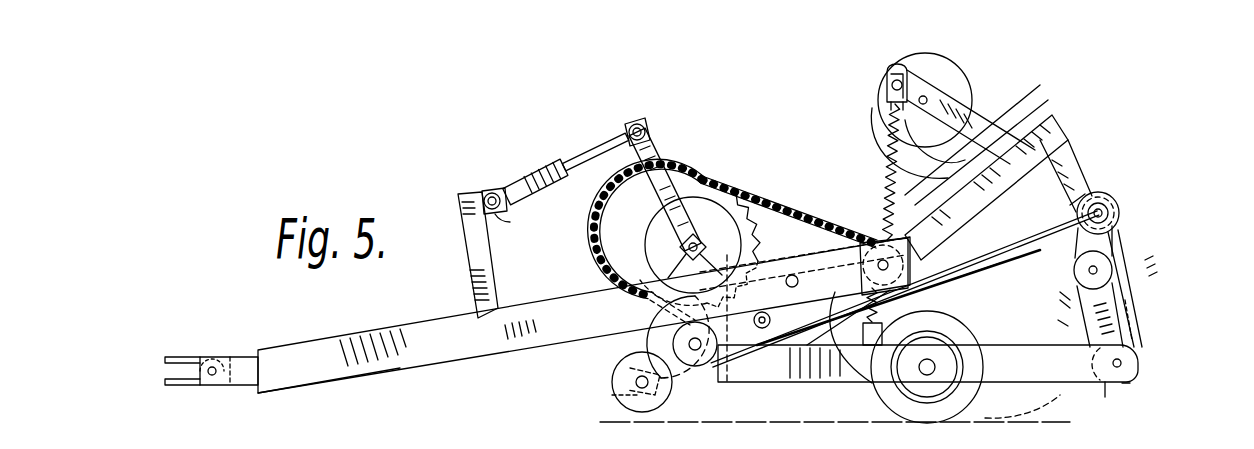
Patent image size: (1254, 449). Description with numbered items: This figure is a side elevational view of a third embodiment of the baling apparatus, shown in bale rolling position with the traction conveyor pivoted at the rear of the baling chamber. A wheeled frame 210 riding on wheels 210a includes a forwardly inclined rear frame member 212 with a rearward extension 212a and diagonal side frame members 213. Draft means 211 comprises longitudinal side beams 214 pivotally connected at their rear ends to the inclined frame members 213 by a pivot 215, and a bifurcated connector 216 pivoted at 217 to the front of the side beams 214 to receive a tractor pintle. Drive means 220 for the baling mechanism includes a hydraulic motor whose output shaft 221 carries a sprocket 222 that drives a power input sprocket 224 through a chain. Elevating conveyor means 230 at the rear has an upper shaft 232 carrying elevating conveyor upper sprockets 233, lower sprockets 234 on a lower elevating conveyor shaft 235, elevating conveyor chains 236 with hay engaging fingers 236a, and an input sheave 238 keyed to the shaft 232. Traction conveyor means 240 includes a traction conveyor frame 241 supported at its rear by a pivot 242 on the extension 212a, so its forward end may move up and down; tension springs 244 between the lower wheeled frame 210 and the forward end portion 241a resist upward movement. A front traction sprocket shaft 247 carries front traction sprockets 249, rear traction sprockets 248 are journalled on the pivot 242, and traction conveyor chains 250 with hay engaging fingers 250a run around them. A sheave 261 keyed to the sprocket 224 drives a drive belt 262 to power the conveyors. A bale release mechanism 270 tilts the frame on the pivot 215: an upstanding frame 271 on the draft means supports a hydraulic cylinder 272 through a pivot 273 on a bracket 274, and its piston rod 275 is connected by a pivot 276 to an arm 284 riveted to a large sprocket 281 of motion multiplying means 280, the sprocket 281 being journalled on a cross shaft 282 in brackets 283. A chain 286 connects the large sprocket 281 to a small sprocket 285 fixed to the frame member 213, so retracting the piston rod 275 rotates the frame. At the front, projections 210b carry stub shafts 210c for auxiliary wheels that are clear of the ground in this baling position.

The frame 210 is at (820, 388).
The wheels 210a is at (905, 380).
The projections 210b is at (636, 382).
The stub shafts 210c is at (618, 398).
The draft means 211 is at (478, 372).
The rear frame member 212 is at (1068, 132).
The rearward extension 212a is at (1110, 194).
The side frame members 213 is at (990, 232).
The side beams 214 is at (333, 348).
The pivot 215 is at (892, 265).
The bifurcated connector 216 is at (182, 355).
The pivot 217 is at (212, 367).
The drive means 220 is at (625, 349).
The output shaft 221 is at (790, 276).
The sprocket 222 is at (822, 236).
The power input sprocket 224 is at (697, 378).
The elevating conveyor means 230 is at (1168, 308).
The upper shaft 232 is at (1110, 266).
The elevating conveyor upper sprockets 233 is at (1110, 242).
The lower sprockets 234 is at (1150, 366).
The lower elevating conveyor shaft 235 is at (1138, 348).
The elevating conveyor chains 236 is at (1128, 300).
The hay engaging fingers 236a is at (1128, 384).
The input sheave 238 is at (1082, 292).
The traction conveyor means 240 is at (1047, 88).
The traction conveyor frame 241 is at (1000, 110).
The forward end portion 241a is at (888, 78).
The pivot 242 is at (1112, 202).
The tension springs 244 is at (878, 146).
The front traction sprocket shaft 247 is at (930, 86).
The rear traction sprockets 248 is at (1112, 215).
The front traction sprockets 249 is at (885, 114).
The traction conveyor chains 250 is at (1036, 96).
The hay engaging fingers 250a is at (882, 96).
The sheave 261 is at (655, 332).
The drive belt 262 is at (1025, 258).
The bale release mechanism 270 is at (566, 110).
The upstanding frame 271 is at (470, 265).
The hydraulic cylinder 272 is at (528, 180).
The pivot 273 is at (484, 196).
The bracket 274 is at (510, 222).
The piston rod 275 is at (606, 146).
The pivot 276 is at (637, 123).
The motion multiplying means 280 is at (720, 183).
The large sprocket 281 is at (650, 246).
The cross shaft 282 is at (690, 245).
The brackets 283 is at (660, 273).
The arm 284 is at (655, 148).
The small sprocket 285 is at (918, 291).
The chain 286 is at (772, 206).